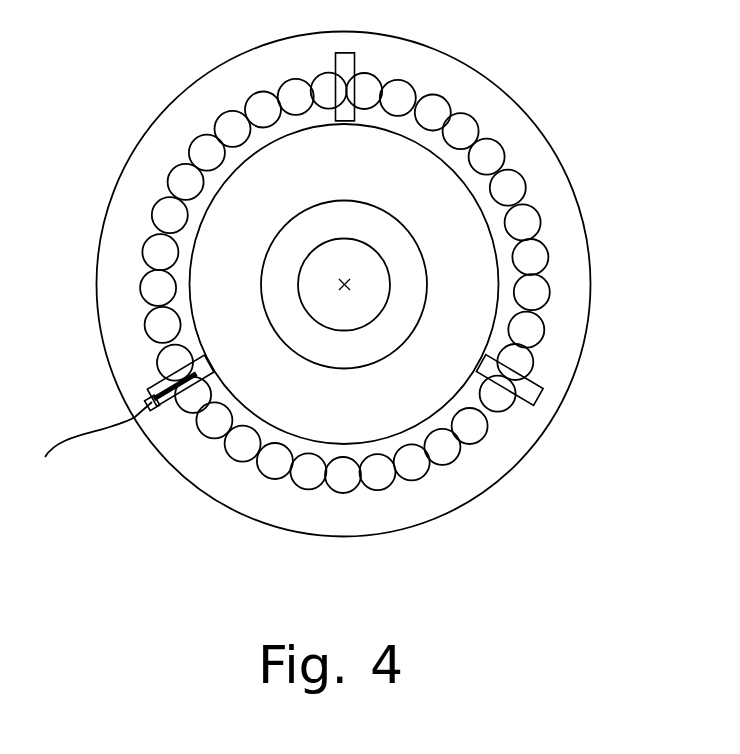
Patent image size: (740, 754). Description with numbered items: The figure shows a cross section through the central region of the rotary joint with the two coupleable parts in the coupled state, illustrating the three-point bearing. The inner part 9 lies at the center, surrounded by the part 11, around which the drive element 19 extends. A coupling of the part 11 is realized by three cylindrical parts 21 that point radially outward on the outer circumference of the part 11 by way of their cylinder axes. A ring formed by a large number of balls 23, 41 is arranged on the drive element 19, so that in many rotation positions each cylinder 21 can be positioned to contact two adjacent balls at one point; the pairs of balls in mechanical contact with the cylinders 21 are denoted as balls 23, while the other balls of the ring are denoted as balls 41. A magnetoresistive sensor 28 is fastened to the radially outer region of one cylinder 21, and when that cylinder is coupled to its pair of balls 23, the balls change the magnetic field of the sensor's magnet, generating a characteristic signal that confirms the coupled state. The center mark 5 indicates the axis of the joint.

The axis / center of rotation 5 is at (350, 283).
The part 9 is at (331, 328).
The part 11 is at (497, 306).
The drive element 19 is at (574, 374).
The cylindrical part 21 is at (355, 64).
The pair of balls 23 is at (328, 125).
The magnetoresistive sensor 28 is at (91, 447).
The balls 41 is at (504, 150).